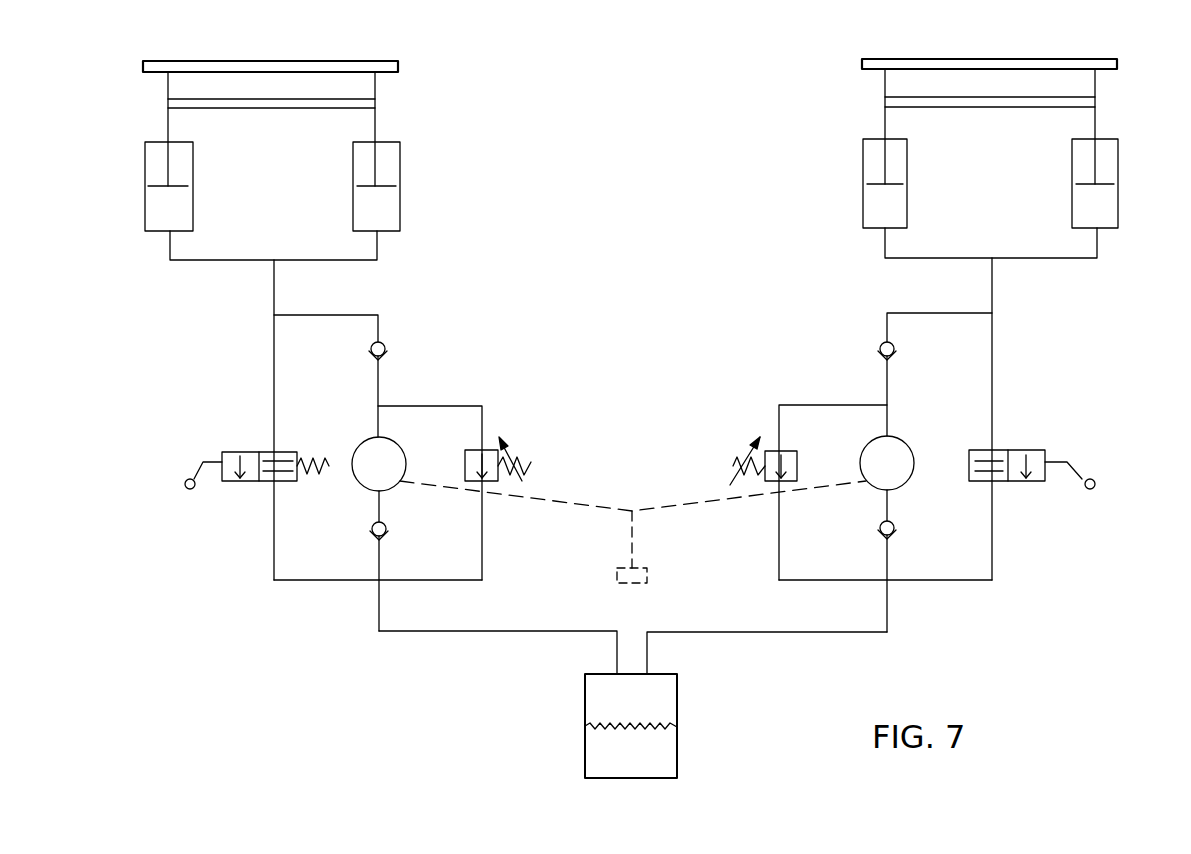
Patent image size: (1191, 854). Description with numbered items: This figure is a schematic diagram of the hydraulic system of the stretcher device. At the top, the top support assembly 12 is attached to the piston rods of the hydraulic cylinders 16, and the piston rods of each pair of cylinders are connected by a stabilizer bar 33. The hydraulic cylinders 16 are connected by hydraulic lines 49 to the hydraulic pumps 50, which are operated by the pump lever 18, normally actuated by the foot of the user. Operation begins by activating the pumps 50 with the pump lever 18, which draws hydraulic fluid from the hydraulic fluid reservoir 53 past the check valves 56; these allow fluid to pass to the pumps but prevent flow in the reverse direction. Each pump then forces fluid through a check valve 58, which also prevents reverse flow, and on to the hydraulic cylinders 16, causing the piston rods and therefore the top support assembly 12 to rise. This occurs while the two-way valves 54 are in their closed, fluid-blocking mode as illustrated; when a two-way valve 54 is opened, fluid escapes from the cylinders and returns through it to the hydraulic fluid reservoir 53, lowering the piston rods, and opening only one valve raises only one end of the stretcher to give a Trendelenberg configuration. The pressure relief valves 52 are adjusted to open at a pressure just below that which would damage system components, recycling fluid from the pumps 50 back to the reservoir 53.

The top support assembly 12 is at (382, 56).
The stabilizer bar 33 is at (185, 99).
The hydraulic cylinder 16 is at (152, 211).
The hydraulic line 49 is at (272, 302).
The check valve 58 is at (390, 349).
The hydraulic pump 50 is at (362, 486).
The 2-way valve 54 is at (222, 452).
The pressure relief valve 52 is at (723, 467).
The check valve 56 is at (371, 534).
The hydraulic fluid reservoir 53 is at (590, 744).
The pump lever 18 is at (615, 580).